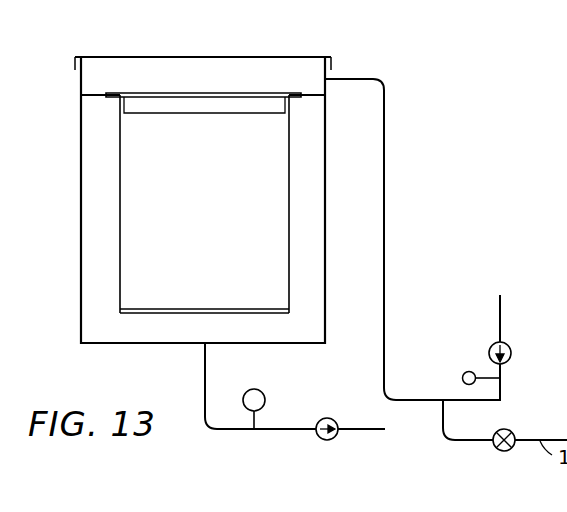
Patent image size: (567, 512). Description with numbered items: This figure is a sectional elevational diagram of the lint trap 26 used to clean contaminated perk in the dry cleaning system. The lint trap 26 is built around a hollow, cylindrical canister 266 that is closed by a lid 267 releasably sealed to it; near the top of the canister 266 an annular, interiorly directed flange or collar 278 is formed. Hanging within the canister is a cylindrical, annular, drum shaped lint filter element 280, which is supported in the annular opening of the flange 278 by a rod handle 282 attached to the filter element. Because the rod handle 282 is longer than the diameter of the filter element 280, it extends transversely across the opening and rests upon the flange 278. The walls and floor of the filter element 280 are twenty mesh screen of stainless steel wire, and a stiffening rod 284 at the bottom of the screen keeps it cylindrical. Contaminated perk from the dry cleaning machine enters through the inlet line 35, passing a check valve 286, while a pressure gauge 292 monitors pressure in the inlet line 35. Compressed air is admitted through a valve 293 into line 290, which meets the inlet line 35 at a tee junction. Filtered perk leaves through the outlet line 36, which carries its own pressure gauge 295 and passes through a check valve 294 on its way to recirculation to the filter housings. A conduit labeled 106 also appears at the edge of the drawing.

The lint trap 26 is at (69, 256).
The canister 266 is at (81, 152).
The lid 267 is at (137, 57).
The flange 278 is at (96, 95).
The rod handle 282 is at (215, 93).
The lint filter element 280 is at (268, 194).
The stiffening rod 284 is at (255, 315).
The inlet line 35 is at (385, 245).
The check valve 286 is at (512, 350).
The pressure gauge 292 is at (463, 372).
The line 290 is at (446, 444).
The valve 293 is at (500, 428).
The outlet line 36 is at (248, 431).
The pressure gauge 295 is at (266, 405).
The check valve 294 is at (338, 436).
The conduit 106 is at (566, 22).